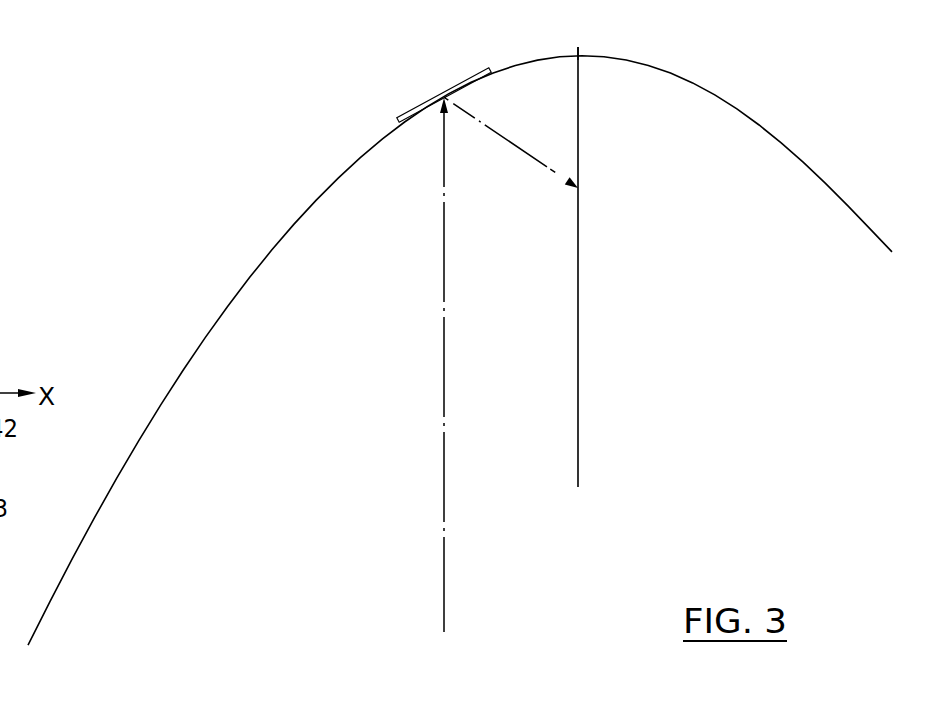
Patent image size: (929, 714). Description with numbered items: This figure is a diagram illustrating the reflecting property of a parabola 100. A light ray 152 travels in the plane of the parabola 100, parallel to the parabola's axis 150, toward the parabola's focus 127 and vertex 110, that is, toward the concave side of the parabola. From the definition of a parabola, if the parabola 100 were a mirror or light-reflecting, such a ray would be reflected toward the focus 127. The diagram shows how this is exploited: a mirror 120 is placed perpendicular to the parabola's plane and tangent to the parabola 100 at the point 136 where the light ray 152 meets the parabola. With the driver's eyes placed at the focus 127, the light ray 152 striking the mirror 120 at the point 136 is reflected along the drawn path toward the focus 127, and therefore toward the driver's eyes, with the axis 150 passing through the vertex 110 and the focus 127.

The parabola 100 is at (93, 521).
The vertex 110 is at (578, 48).
The mirror 120 is at (475, 72).
The focus 127 is at (578, 188).
The point 136 is at (445, 98).
The axis 150 is at (578, 440).
The light ray 152 is at (443, 555).